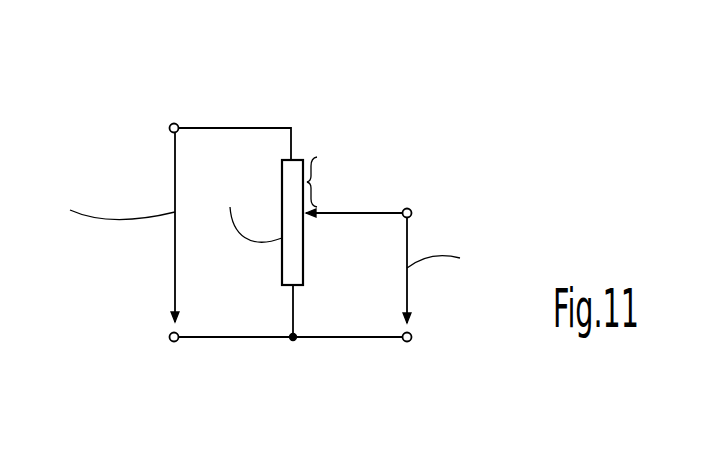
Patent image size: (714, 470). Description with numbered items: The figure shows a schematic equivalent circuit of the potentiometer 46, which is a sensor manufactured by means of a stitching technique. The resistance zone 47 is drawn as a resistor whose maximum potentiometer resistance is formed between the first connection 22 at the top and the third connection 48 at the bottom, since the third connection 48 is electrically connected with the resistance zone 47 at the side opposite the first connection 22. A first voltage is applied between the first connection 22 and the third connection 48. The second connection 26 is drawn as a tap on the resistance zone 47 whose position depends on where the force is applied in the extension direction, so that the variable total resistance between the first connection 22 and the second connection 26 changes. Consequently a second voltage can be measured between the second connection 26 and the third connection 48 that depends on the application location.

The first connection 22 is at (173, 122).
The second connection 26 is at (411, 209).
The potentiometer 46 is at (425, 138).
The resistance zone 47 is at (306, 150).
The third connection 48 is at (171, 343).